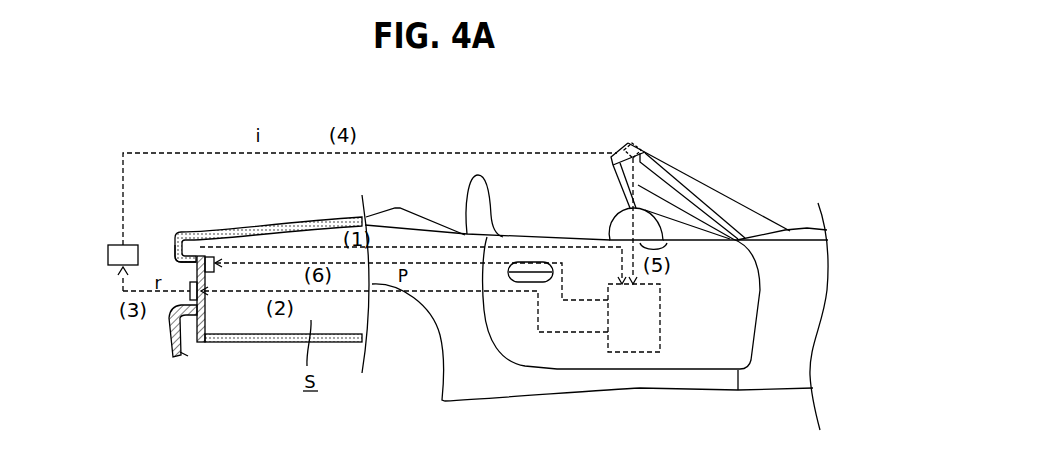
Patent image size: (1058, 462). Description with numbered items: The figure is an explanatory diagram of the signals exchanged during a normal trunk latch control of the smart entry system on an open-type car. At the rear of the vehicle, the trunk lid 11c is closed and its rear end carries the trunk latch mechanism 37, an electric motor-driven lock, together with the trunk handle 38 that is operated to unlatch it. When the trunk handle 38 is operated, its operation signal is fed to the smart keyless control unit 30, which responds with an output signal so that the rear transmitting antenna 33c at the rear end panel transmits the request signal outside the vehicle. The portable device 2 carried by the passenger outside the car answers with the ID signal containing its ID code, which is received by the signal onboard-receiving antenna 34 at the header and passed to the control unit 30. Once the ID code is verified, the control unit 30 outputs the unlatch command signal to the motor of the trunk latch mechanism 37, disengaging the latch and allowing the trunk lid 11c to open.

The portable device 2 is at (108, 254).
The trunk lid 11c is at (244, 228).
The trunk handle 38 is at (174, 263).
The trunk latch mechanism 37 is at (200, 252).
The rear transmitting antenna 33c is at (182, 306).
The signal onboard-receiving antenna 34 is at (637, 140).
The smart keyless control unit 30 is at (635, 352).